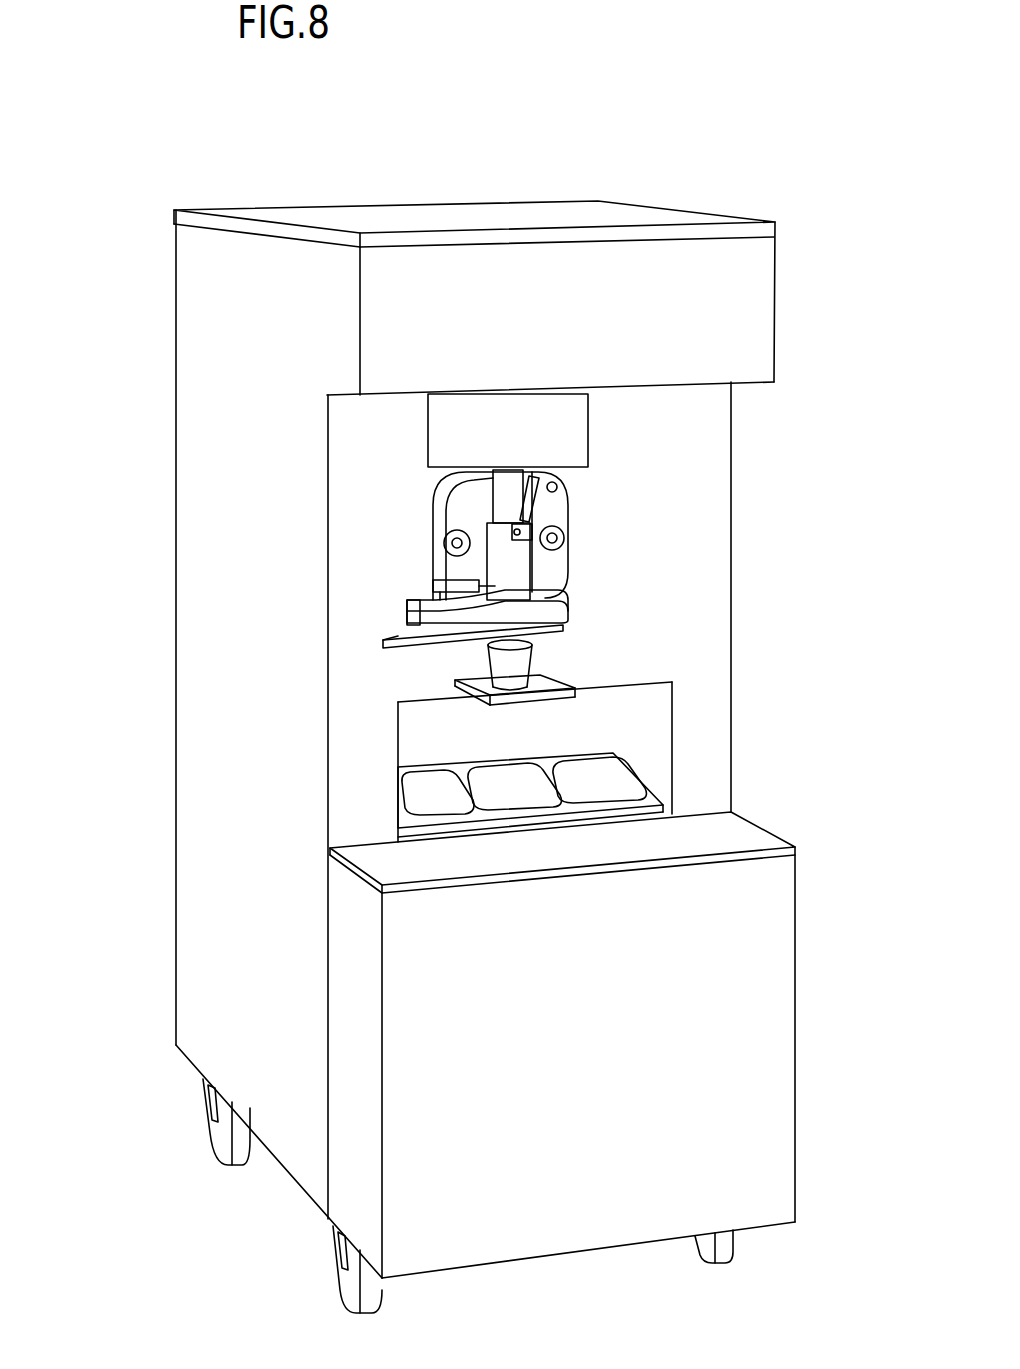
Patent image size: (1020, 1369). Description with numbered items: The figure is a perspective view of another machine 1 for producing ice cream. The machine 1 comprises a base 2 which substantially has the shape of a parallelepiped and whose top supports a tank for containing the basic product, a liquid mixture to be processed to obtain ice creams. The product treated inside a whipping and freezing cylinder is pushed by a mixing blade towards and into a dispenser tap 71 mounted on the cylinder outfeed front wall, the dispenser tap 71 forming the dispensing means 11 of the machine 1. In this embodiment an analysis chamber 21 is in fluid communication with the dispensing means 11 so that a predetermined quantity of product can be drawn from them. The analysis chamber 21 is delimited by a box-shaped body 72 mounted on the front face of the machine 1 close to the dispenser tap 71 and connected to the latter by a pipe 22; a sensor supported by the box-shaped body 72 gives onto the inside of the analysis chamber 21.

The machine 1 is at (810, 300).
The base 2 is at (233, 333).
The dispensing means 11 is at (560, 507).
The analysis chamber 21 is at (433, 583).
The pipe 22 is at (487, 545).
The dispenser tap 71 is at (560, 560).
The box-shaped body 72 is at (410, 602).